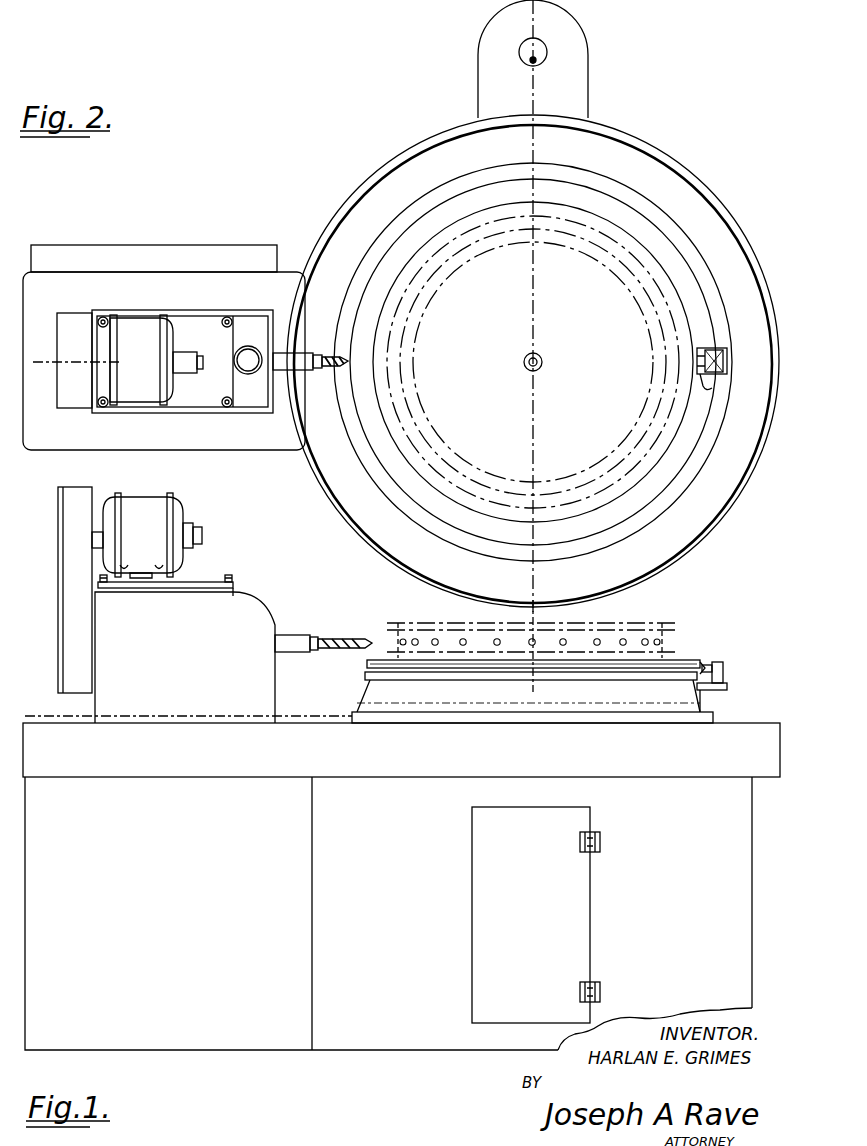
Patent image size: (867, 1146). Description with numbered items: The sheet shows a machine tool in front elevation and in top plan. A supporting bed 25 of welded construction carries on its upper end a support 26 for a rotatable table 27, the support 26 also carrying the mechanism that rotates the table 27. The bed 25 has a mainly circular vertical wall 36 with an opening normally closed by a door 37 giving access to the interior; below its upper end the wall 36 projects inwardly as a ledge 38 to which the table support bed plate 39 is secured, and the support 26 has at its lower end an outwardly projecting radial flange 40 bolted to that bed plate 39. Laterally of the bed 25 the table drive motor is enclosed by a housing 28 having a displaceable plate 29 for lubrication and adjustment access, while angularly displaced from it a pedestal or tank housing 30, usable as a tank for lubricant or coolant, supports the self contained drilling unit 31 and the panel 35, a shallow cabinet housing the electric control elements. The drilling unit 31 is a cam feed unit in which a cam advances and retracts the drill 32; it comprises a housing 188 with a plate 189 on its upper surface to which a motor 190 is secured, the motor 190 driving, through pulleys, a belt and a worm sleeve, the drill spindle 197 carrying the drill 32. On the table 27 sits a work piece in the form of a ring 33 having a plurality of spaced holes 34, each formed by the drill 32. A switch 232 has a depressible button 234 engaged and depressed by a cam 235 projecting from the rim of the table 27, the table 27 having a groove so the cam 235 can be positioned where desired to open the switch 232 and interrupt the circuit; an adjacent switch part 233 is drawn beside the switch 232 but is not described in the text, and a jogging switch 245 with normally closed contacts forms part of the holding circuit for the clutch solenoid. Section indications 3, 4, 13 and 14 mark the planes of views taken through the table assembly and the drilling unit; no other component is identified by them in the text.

In FIG. 2, the section line 3- 3 is at (514, 223).
In FIG. 2, the section line 4- 4 is at (515, 206).
In FIG. 1, the section line 4- 4 is at (482, 615).
In FIG. 2, the section line 13- 13 is at (41, 350).
In FIG. 2, the section line 14- 14 is at (79, 320).
In FIG. 2, the supporting bed 25 is at (366, 187).
In FIG. 1, the supporting bed 25 is at (402, 1043).
In FIG. 1, the support 26 is at (698, 700).
In FIG. 2, the rotatable table 27 is at (632, 239).
In FIG. 1, the rotatable table 27 is at (480, 670).
In FIG. 2, the housing 28 is at (583, 80).
In FIG. 2, the displaceable plate 29 is at (546, 52).
In FIG. 1, the pedestal 30 is at (211, 1043).
In FIG. 2, the drilling unit 31 is at (185, 347).
In FIG. 1, the drilling unit 31 is at (232, 608).
In FIG. 2, the drill 32 is at (323, 354).
In FIG. 1, the drill 32 is at (340, 636).
In FIG. 2, the ring 33 is at (599, 260).
In FIG. 1, the ring 33 is at (669, 624).
In FIG. 1, the spaced holes 34 is at (536, 678).
In FIG. 2, the panel 35 is at (242, 265).
In FIG. 2, the vertical wall 36 is at (703, 196).
In FIG. 1, the vertical wall 36 is at (752, 893).
In FIG. 1, the door 37 is at (583, 938).
In FIG. 2, the ledge 38 is at (731, 243).
In FIG. 2, the table support bed plate 39 is at (718, 311).
In FIG. 1, the table support bed plate 39 is at (728, 721).
In FIG. 2, the radial flange 40 is at (603, 530).
In FIG. 1, the radial flange 40 is at (640, 715).
In FIG. 2, the housing 188 is at (254, 398).
In FIG. 1, the housing 188 is at (262, 696).
In FIG. 2, the plate 189 is at (200, 398).
In FIG. 1, the plate 189 is at (210, 582).
In FIG. 2, the motor 190 is at (150, 327).
In FIG. 1, the motor 190 is at (178, 510).
In FIG. 2, the drill spindle 197 is at (293, 372).
In FIG. 1, the drill spindle 197 is at (285, 643).
In FIG. 2, the switch 232 is at (722, 356).
In FIG. 1, the switch 232 is at (728, 683).
In FIG. 2, the stop block 233 is at (727, 368).
In FIG. 1, the depressible button 234 is at (725, 666).
In FIG. 2, the cam 235 is at (712, 388).
In FIG. 1, the cam 235 is at (700, 662).
In FIG. 2, the jogging switch 245 is at (249, 350).